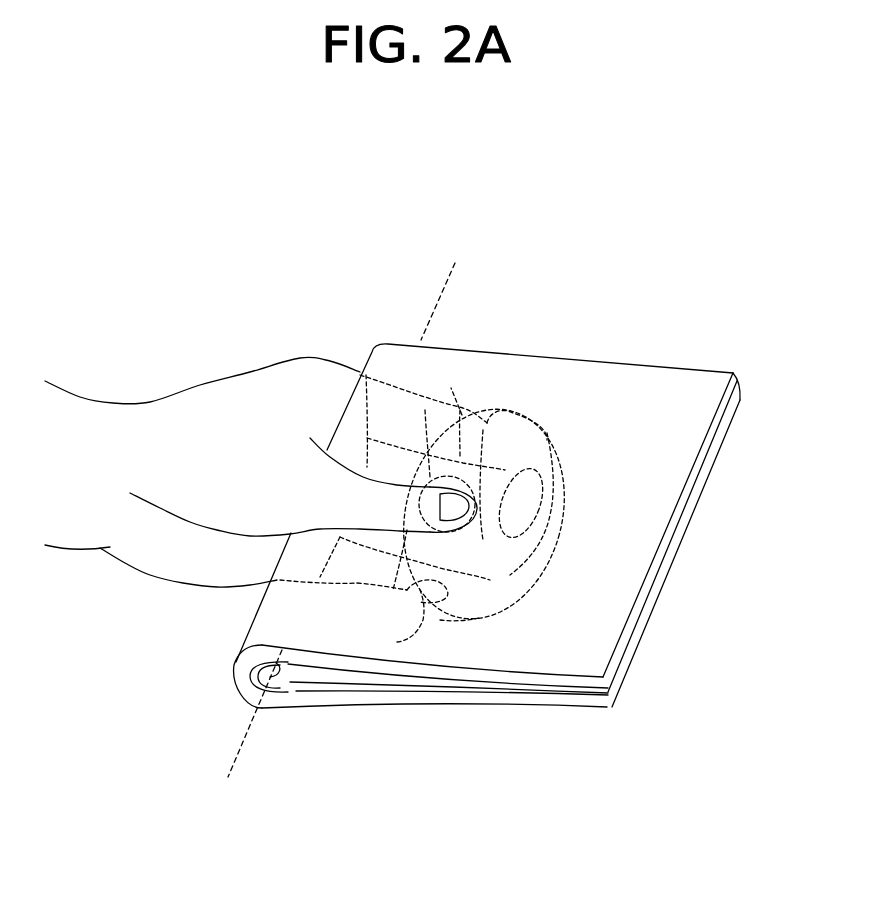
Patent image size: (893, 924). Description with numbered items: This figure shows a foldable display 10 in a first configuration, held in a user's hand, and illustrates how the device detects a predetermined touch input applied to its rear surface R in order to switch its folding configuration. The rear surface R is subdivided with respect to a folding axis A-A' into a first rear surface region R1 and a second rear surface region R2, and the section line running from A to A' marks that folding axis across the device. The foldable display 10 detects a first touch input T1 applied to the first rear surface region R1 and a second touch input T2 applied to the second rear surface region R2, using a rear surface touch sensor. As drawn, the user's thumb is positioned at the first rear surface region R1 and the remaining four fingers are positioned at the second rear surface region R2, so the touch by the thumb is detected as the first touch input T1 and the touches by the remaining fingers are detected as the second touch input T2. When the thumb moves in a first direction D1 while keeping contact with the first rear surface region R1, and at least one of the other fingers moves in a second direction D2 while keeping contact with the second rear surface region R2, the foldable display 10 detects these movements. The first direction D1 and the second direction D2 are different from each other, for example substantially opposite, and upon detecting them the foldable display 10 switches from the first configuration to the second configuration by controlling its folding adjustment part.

The foldable display 10 is at (588, 249).
The rear surface R is at (723, 630).
The first rear surface region R1 is at (587, 640).
The second rear surface region R2 is at (580, 707).
The first touch input T1 is at (417, 505).
The second touch input T2 is at (550, 442).
The first direction D1 is at (447, 380).
The second direction D2 is at (382, 642).
The folding axis A is at (441, 286).
The folding axis A' is at (248, 730).